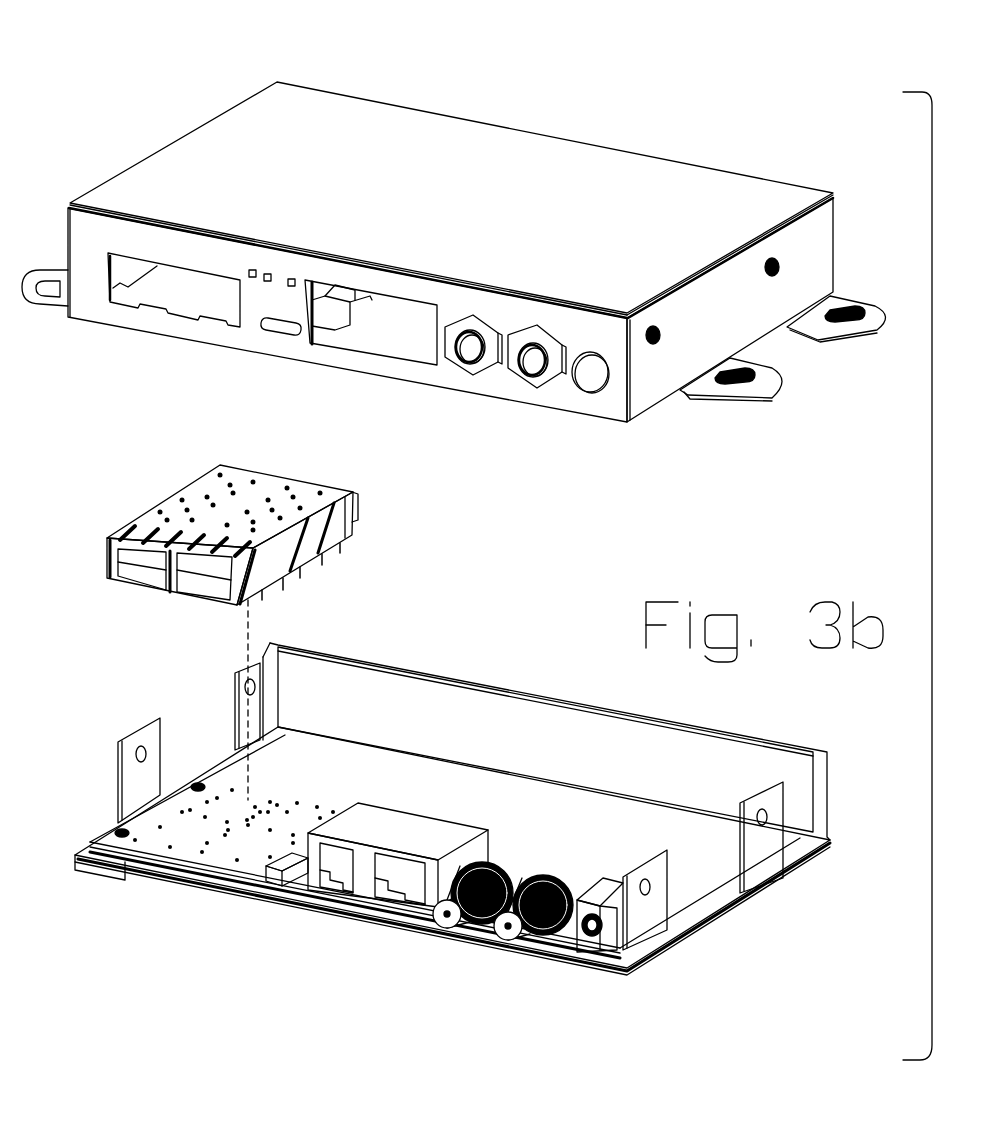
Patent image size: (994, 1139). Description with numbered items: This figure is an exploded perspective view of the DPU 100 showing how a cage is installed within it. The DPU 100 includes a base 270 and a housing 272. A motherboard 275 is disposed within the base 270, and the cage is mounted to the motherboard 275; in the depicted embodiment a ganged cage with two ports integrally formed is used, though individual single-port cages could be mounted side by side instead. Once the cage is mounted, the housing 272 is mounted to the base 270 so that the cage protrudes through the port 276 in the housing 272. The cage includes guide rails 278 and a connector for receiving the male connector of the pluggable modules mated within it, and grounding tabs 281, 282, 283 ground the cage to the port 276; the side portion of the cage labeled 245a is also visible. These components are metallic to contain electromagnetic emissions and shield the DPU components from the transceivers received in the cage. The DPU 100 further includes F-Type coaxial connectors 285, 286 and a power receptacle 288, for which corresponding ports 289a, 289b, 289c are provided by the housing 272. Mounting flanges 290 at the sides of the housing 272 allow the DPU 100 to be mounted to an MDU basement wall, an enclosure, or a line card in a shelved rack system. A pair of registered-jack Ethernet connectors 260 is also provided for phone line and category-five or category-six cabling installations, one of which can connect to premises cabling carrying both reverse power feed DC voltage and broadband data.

The DPU 100 is at (408, 82).
The housing 272 is at (696, 183).
The port 276 is at (236, 327).
The port 289a is at (475, 366).
The port 289b is at (538, 378).
The port 289c is at (606, 389).
The mounting flanges 290 is at (767, 395).
The grounding tab 282 is at (123, 523).
The guide rails 278 is at (183, 571).
The grounding tab 281 is at (208, 596).
The grounding tab 283 is at (268, 583).
The cage side 245a is at (344, 522).
The base 270 is at (700, 928).
The motherboard 275 is at (465, 802).
The RJ-45 connectors 260 is at (340, 888).
The F-Type coaxial connector 285 is at (447, 918).
The F-Type coaxial connector 286 is at (508, 931).
The power receptacle 288 is at (604, 941).